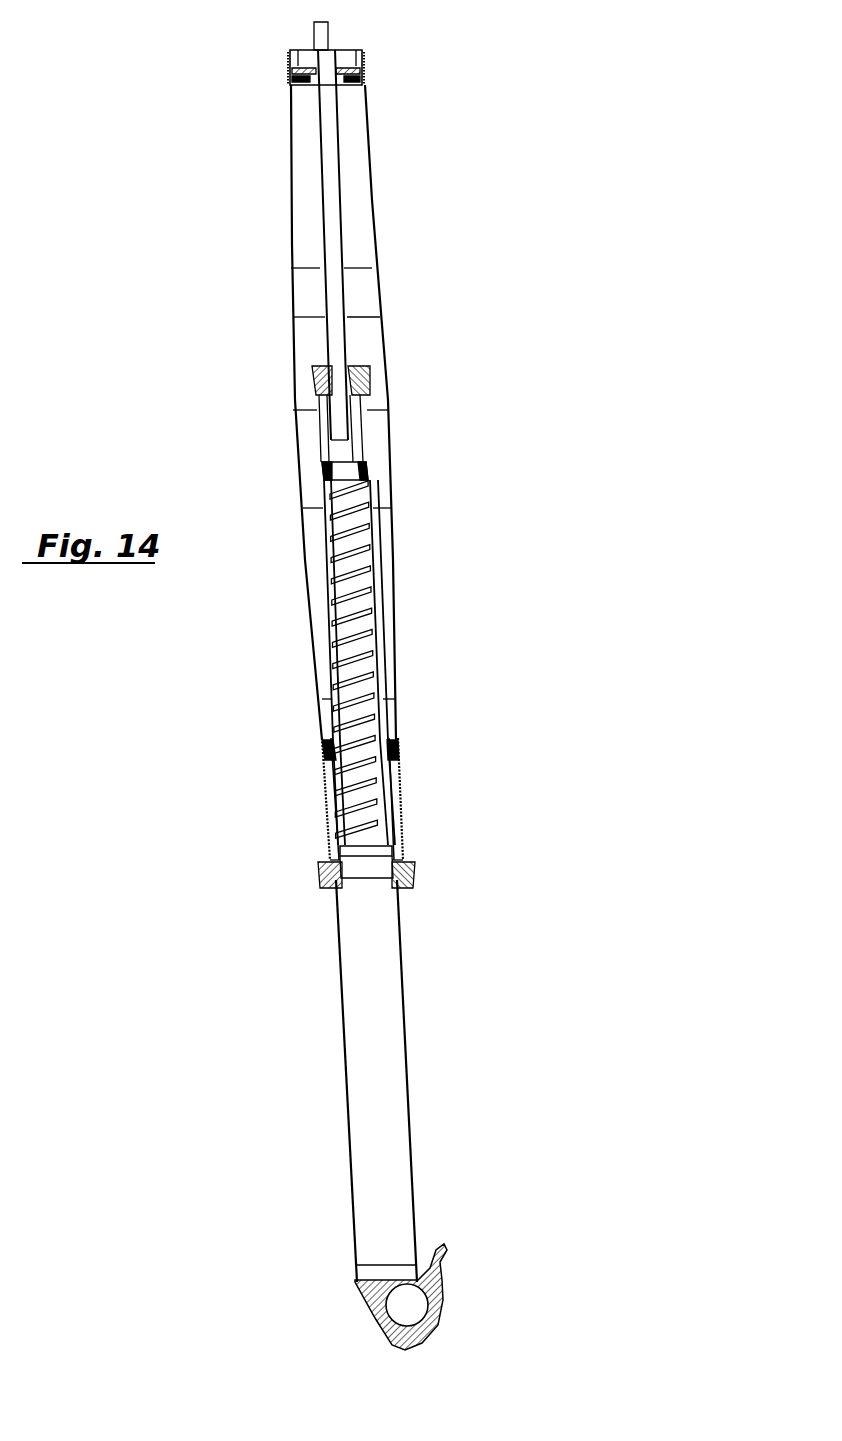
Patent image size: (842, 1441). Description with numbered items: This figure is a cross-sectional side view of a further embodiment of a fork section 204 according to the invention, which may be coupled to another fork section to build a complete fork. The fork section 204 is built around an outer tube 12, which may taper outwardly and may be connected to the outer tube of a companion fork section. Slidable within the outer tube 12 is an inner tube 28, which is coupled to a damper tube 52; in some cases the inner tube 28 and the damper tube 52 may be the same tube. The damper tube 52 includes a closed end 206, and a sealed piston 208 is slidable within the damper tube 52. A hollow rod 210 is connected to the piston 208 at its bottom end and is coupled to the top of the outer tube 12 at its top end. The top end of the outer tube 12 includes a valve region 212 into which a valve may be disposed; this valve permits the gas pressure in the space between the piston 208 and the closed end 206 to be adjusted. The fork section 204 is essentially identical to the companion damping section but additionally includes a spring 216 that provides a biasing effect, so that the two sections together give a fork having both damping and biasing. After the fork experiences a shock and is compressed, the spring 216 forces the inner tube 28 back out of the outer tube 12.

The fork section 204 is at (437, 193).
The outer tube 12 is at (390, 398).
The valve region 212 is at (343, 72).
The hollow rod 210 is at (320, 240).
The sealed piston 208 is at (390, 468).
The spring 216 is at (373, 585).
The damper tube 52 is at (395, 643).
The closed end 206 is at (365, 858).
The inner tube 28 is at (408, 1067).